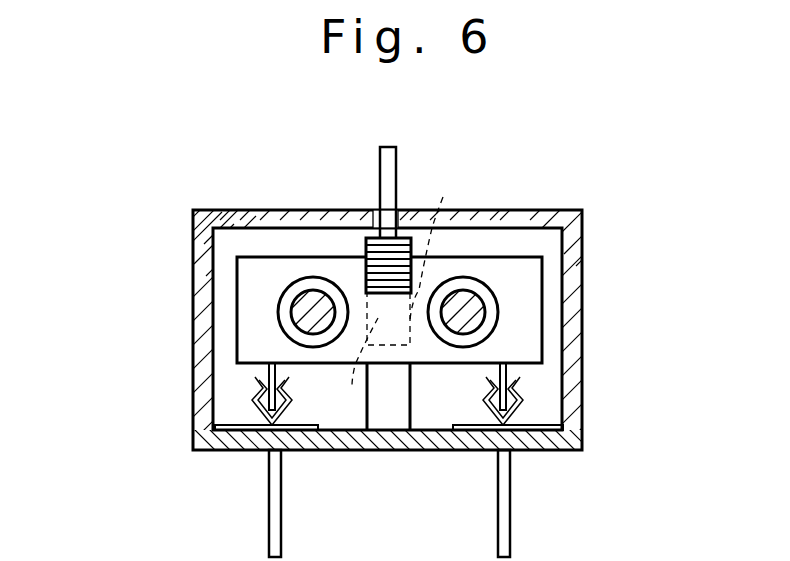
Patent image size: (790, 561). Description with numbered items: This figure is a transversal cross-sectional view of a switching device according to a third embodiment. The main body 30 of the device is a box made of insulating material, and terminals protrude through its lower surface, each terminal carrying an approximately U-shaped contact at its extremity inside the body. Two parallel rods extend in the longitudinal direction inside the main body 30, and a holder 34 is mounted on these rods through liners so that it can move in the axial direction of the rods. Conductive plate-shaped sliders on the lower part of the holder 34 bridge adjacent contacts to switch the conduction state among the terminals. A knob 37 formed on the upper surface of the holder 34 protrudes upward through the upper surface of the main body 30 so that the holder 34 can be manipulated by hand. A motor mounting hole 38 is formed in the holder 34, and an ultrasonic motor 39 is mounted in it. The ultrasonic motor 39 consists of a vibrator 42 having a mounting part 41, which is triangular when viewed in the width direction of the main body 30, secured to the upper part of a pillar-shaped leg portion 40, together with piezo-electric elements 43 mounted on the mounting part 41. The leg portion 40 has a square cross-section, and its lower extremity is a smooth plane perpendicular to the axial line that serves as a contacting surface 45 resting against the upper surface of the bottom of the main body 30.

The main body of the device 30 is at (548, 210).
The holder 34 is at (522, 273).
The knob 37 is at (398, 165).
The motor mounting hole 38 is at (352, 372).
The ultrasonic motor 39 is at (412, 366).
The leg portion 40 is at (372, 395).
The mounting part 41 is at (417, 256).
The vibrator 42 is at (410, 410).
The piezo-electric element 43 is at (373, 227).
The contacting surface 45 is at (398, 445).